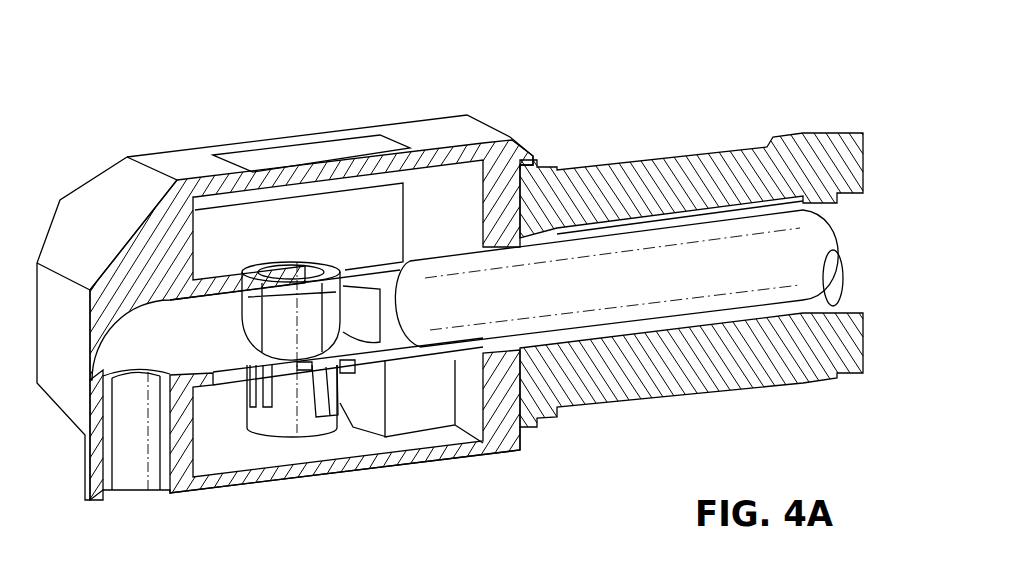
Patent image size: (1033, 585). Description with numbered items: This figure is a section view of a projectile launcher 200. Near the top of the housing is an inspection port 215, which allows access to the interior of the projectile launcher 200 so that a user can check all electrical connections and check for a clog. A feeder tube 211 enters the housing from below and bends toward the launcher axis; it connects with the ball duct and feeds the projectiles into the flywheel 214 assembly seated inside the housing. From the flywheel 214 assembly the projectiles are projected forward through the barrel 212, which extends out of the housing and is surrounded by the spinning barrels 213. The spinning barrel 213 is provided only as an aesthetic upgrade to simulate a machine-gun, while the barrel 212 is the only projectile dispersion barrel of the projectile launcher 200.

The projectile launcher 200 is at (450, 296).
The feeder tube 211 is at (130, 460).
The barrel 212 is at (650, 303).
The spinning barrels 213 is at (613, 383).
The flywheel assembly 214 is at (294, 412).
The inspection port 215 is at (284, 160).